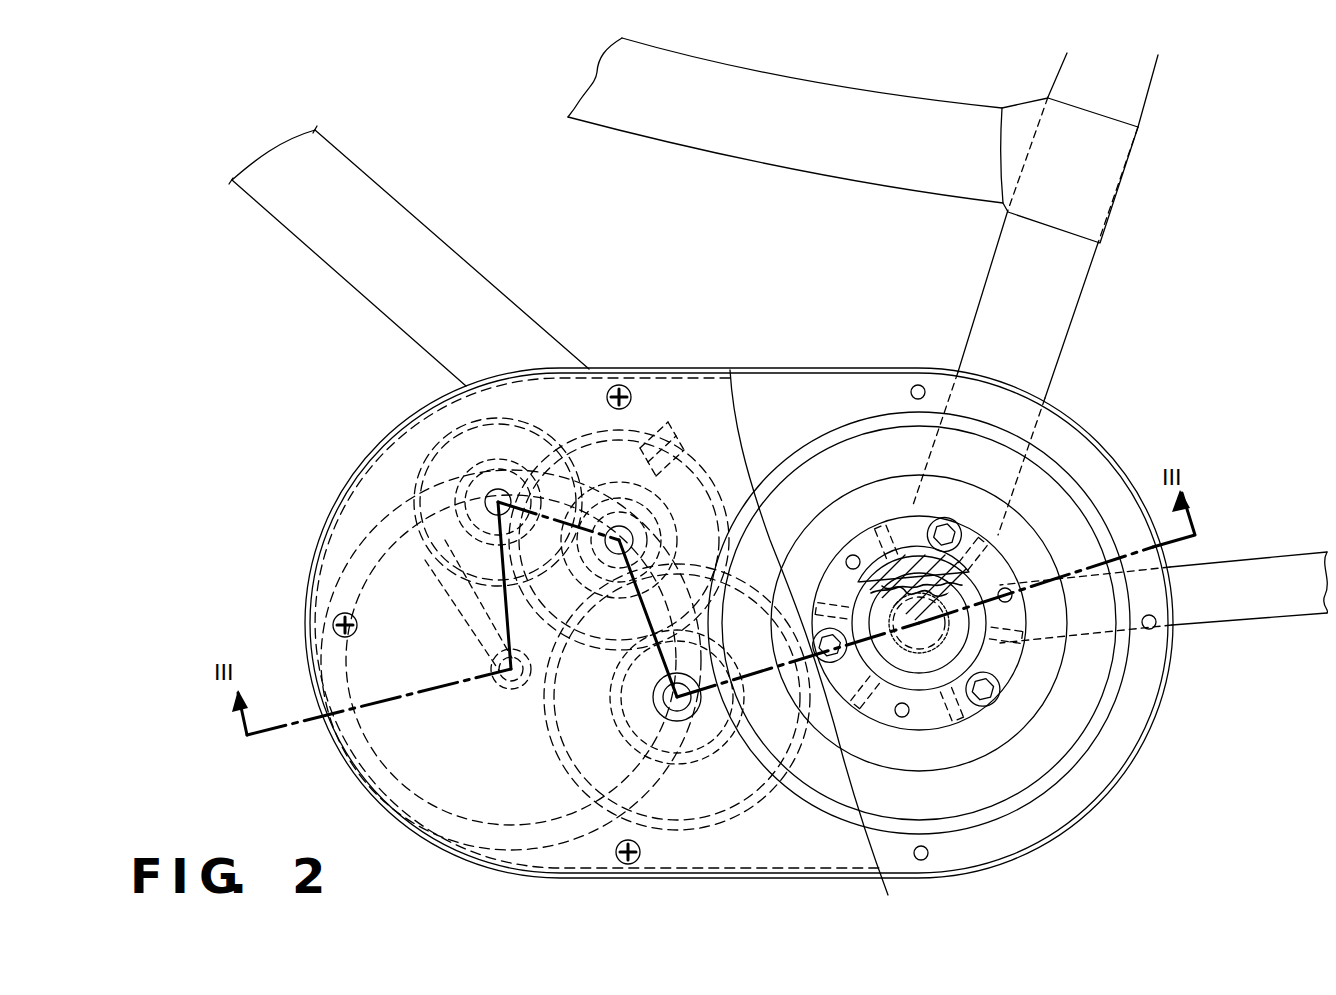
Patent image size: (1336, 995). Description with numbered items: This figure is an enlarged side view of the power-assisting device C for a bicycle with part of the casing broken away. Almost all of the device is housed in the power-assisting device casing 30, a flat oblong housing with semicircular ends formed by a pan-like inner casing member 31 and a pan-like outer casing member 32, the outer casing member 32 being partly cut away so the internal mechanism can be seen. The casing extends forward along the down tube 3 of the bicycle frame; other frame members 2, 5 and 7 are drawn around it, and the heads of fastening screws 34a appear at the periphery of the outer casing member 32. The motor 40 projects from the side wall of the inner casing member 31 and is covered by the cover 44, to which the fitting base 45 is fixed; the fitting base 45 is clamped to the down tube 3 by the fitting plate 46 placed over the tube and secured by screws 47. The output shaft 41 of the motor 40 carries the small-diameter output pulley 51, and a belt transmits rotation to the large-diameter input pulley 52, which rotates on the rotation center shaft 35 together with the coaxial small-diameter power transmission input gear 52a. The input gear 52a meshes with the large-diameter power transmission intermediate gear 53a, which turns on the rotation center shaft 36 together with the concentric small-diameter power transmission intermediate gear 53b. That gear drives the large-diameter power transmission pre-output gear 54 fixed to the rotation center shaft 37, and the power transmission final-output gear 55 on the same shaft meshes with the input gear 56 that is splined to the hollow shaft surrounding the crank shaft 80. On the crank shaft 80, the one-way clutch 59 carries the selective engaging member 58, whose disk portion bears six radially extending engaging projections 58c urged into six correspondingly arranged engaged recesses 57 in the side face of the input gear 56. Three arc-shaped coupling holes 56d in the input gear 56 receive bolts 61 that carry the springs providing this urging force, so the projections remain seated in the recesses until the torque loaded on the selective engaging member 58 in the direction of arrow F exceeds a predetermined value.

The seat tube 2 is at (1085, 283).
The down tube 3 is at (478, 275).
The frame tube 5 is at (661, 150).
The rear arm 7 is at (1220, 567).
The power-assisting device casing 30 is at (328, 508).
The inner casing member 31 is at (1083, 425).
The outer casing member 32 is at (698, 367).
The cover screws 34a is at (620, 385).
The rotation center shaft 35 is at (500, 487).
The rotation center shaft 36 is at (626, 580).
The rotation center shaft 37 is at (655, 685).
The motor 40 is at (358, 700).
The output shaft 41 is at (468, 606).
The cover 44 is at (390, 532).
The fitting base 45 is at (568, 460).
The fitting plate 46 is at (655, 440).
The screws 47 is at (690, 446).
The output pulley 51 is at (505, 688).
The input pulley 52 is at (462, 572).
The power transmission input gear 52a is at (525, 548).
The large-diameter power transmission intermediate gear 53a is at (600, 448).
The small-diameter power transmission intermediate gear 53b is at (645, 490).
The power transmission pre-output gear 54 is at (620, 726).
The power transmission final-output gear 55 is at (630, 756).
The input gear 56 is at (843, 445).
The coupling holes 56d is at (915, 486).
The engaged recesses 57 is at (848, 600).
The selective engaging member 58 is at (1024, 567).
The engaging projections 58c is at (840, 560).
The one-way clutch 59 is at (856, 514).
The bolt 61 is at (945, 520).
The crank shaft 80 is at (946, 614).
The power-assisting device C is at (390, 428).
The arrow F is at (950, 760).